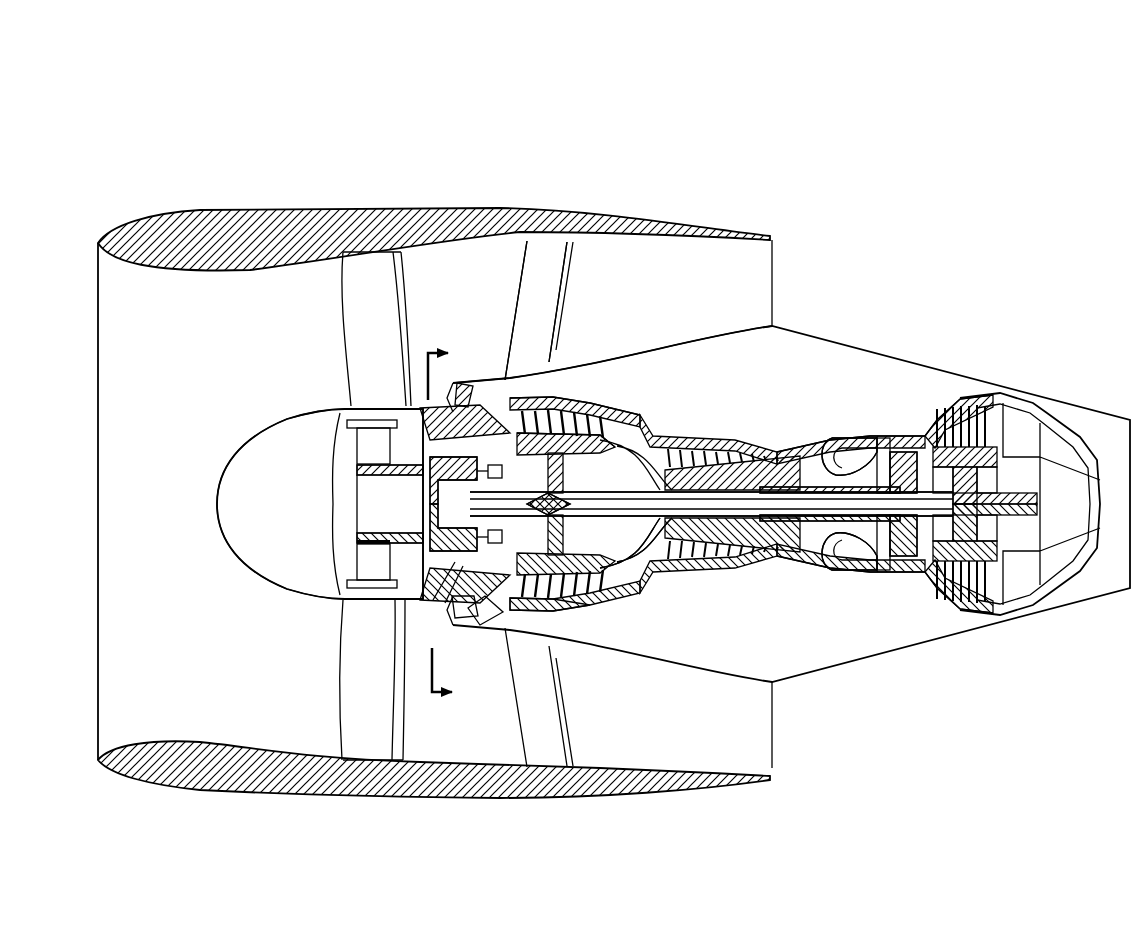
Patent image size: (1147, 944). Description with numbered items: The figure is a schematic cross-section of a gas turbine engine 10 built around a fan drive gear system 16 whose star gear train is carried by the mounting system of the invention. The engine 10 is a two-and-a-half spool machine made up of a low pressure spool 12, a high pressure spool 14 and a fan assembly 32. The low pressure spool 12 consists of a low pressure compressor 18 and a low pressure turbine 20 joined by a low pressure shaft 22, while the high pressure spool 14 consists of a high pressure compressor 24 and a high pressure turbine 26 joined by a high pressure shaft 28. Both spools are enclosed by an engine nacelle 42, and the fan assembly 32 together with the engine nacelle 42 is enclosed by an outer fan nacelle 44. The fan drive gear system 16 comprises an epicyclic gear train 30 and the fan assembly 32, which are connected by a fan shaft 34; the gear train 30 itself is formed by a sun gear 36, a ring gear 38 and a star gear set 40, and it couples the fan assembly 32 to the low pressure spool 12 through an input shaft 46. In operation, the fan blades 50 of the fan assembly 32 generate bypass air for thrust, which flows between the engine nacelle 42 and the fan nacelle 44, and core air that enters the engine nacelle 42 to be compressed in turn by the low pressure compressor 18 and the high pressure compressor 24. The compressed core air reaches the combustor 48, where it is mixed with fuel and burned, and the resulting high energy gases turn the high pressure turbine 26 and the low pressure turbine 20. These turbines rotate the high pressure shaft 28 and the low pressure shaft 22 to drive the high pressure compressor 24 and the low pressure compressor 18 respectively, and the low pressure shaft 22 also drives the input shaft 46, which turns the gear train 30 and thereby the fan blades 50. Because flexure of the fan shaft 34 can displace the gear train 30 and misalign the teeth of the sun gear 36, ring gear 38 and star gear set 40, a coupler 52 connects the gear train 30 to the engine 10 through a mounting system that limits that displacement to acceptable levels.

The gas turbine engine 10 is at (633, 190).
The low pressure spool 12 is at (646, 524).
The high pressure spool 14 is at (864, 530).
The fan drive gear system 16 is at (405, 572).
The low pressure compressor 18 is at (576, 402).
The low pressure turbine 20 is at (967, 396).
The low pressure shaft 22 is at (613, 522).
The high pressure compressor 24 is at (786, 443).
The high pressure turbine 26 is at (899, 429).
The high pressure shaft 28 is at (828, 576).
The epicyclic gear train 30 is at (428, 499).
The fan assembly 32 is at (372, 385).
The fan shaft 34 is at (360, 470).
The sun gear 36 is at (478, 627).
The ring gear 38 is at (455, 622).
The star gear set 40 is at (452, 554).
The engine nacelle 42 is at (463, 375).
The fan nacelle 44 is at (265, 212).
The input shaft 46 is at (533, 397).
The combustor 48 is at (853, 428).
The fan blades 50 is at (375, 695).
The coupler 52 is at (525, 605).